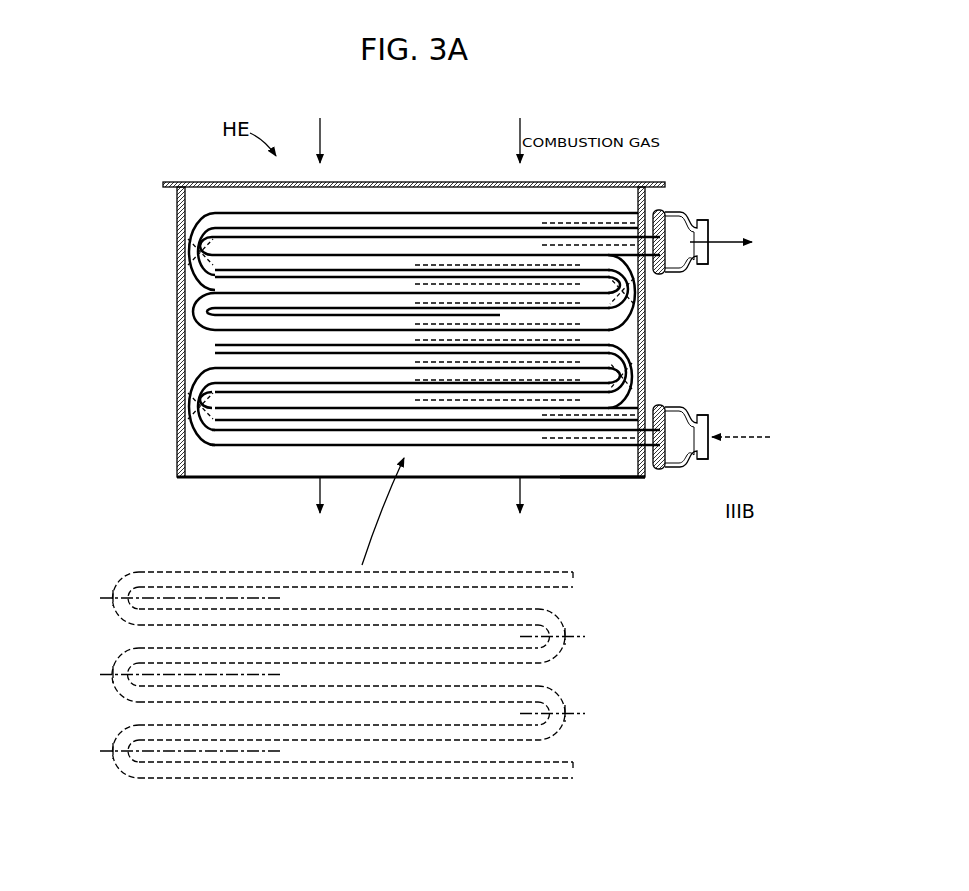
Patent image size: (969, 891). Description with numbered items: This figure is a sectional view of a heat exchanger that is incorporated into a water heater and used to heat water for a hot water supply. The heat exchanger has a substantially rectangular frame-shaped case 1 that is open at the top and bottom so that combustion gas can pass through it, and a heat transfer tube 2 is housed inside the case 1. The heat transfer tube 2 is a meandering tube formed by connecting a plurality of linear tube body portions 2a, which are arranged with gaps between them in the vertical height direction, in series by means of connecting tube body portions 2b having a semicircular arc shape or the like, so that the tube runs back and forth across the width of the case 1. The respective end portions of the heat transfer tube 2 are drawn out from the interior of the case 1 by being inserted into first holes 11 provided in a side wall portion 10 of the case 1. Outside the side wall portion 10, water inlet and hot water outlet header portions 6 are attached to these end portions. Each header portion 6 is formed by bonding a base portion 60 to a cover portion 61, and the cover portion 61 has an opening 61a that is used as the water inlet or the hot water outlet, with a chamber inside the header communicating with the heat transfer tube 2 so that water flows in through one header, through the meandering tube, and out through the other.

The case 1 is at (180, 214).
The heat transfer tube 2 is at (426, 231).
The linear tube body portion 2a is at (330, 248).
The connecting tube body portion 2b is at (203, 332).
The header portion 6 is at (755, 334).
The side wall portion 10 is at (645, 330).
The first hole 11 is at (625, 478).
The base portion 60 is at (660, 205).
The cover portion 61 is at (690, 264).
The opening 61a is at (706, 244).